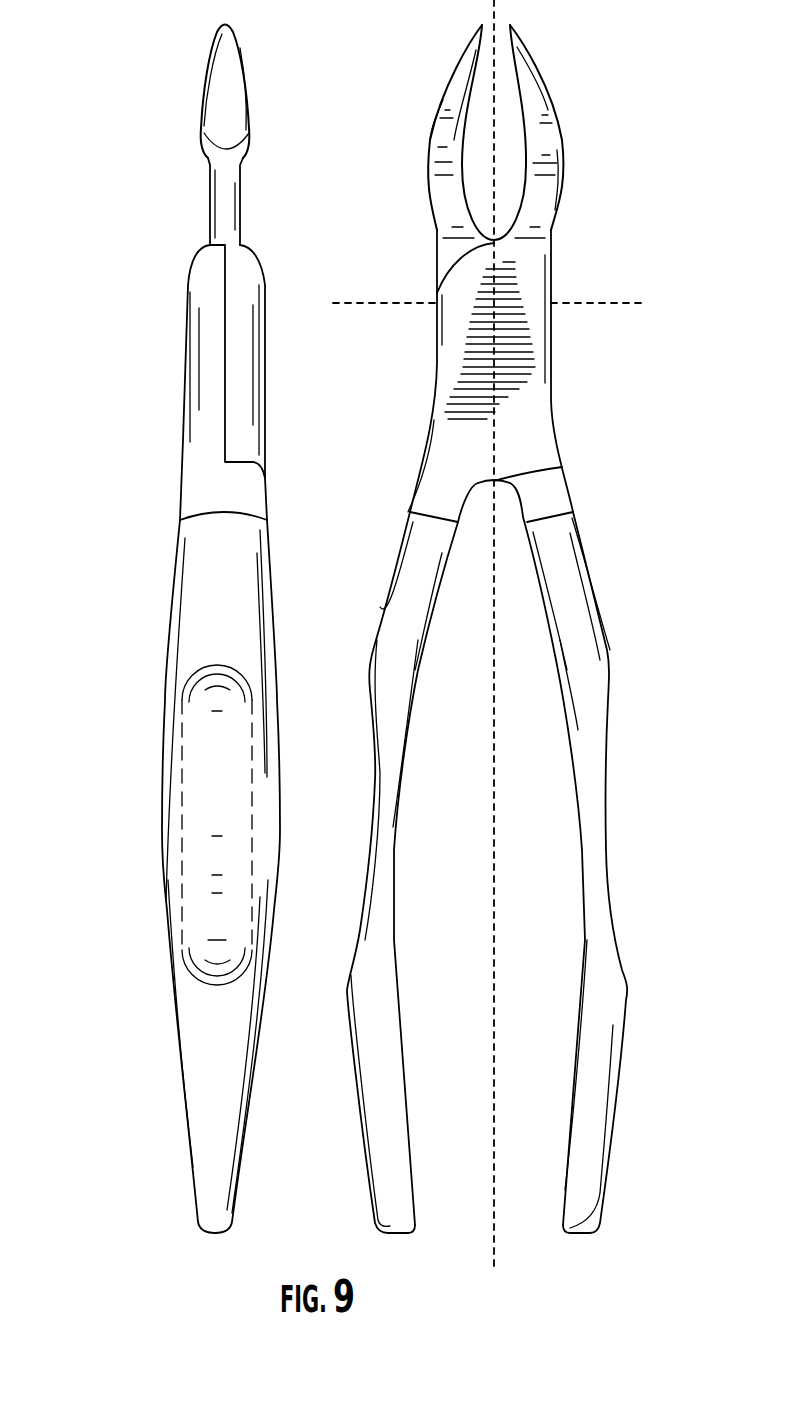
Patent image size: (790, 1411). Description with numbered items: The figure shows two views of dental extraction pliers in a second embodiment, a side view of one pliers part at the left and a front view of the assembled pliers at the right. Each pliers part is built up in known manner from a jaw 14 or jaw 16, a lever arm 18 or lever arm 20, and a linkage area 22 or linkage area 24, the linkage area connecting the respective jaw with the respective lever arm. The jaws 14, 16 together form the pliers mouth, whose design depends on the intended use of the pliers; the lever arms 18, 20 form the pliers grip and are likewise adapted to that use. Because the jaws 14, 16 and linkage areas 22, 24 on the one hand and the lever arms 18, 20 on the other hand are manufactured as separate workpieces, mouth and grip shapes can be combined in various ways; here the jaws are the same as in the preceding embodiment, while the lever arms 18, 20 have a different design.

The jaw 14 is at (552, 136).
The jaw 16 is at (230, 103).
The lever arm 18 is at (391, 847).
The lever arm 20 is at (215, 818).
The linkage area 22 is at (208, 362).
The linkage area 24 is at (241, 395).